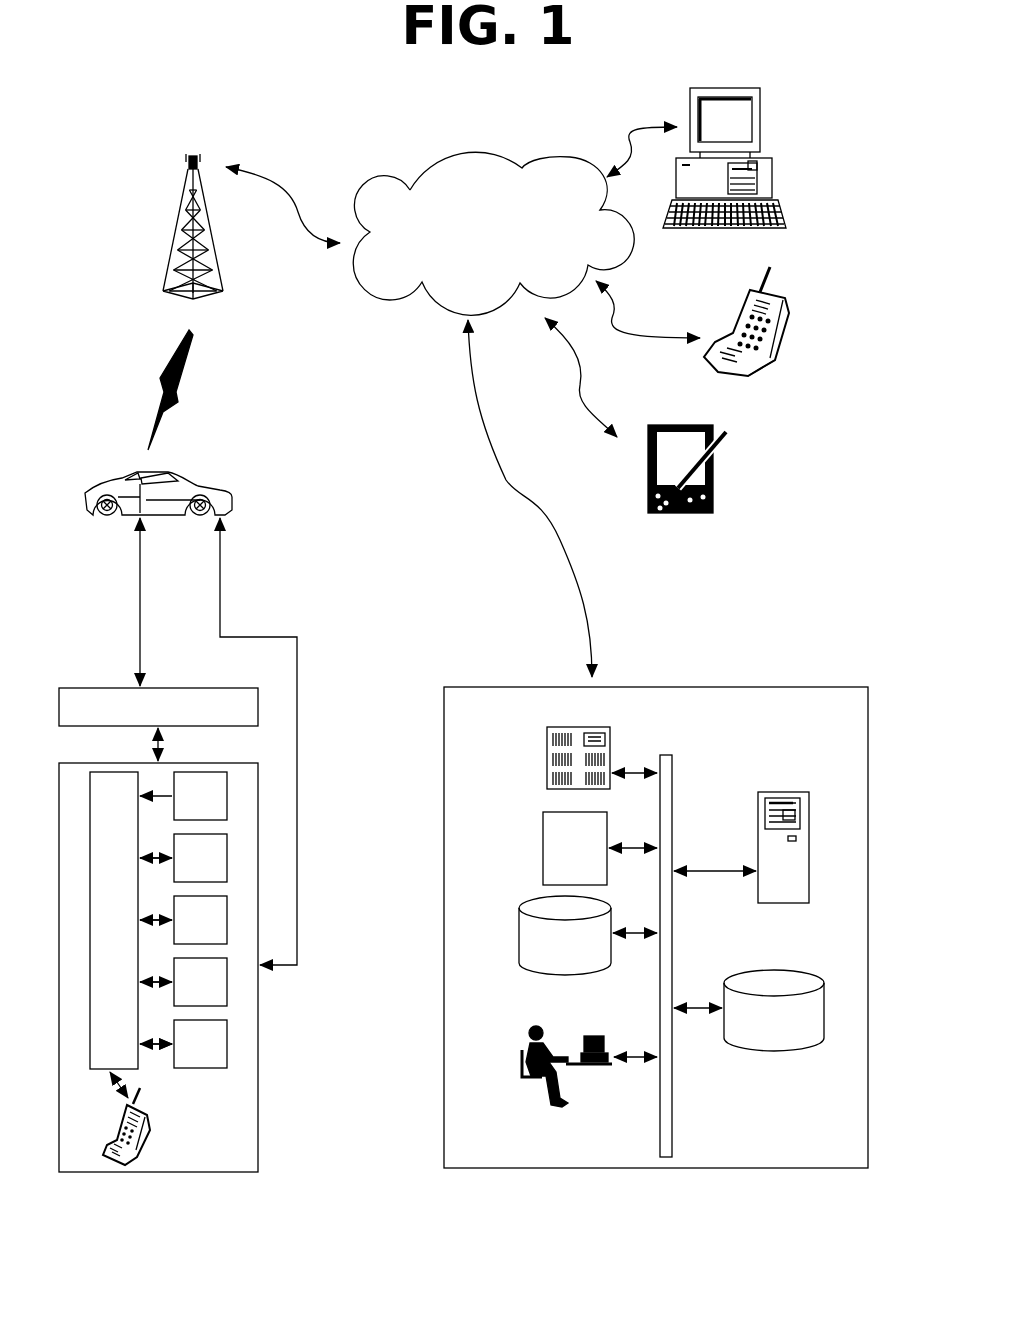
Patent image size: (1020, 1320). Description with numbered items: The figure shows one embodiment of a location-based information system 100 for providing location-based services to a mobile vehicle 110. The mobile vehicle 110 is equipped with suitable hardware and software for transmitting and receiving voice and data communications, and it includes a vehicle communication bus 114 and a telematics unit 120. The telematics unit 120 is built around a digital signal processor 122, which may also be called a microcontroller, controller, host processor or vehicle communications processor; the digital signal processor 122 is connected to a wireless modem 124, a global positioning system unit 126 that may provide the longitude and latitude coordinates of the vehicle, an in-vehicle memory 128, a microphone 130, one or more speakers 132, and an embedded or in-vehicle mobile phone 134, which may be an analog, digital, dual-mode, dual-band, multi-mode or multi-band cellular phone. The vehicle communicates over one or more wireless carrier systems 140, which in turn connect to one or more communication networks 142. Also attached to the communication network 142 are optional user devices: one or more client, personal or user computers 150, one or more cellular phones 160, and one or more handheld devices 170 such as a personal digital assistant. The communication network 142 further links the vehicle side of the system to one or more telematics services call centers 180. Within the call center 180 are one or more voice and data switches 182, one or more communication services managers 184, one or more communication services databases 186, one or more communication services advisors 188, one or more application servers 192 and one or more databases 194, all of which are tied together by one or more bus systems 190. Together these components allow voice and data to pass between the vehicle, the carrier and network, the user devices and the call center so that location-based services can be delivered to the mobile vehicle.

The location-based information system 100 is at (93, 122).
The mobile vehicle 110 is at (118, 478).
The vehicle communication bus 114 is at (158, 707).
The telematics unit 120 is at (158, 1019).
The digital signal processor 122 is at (114, 920).
The wireless modem 124 is at (200, 796).
The global positioning system unit 126 is at (200, 858).
The in-vehicle memory 128 is at (200, 920).
The microphone 130 is at (200, 982).
The speaker 132 is at (200, 1044).
The embedded or in-vehicle mobile phone 134 is at (150, 1120).
The wireless carrier system 140 is at (213, 268).
The communication network 142 is at (493, 233).
The user computer 150 is at (765, 158).
The cellular phone 160 is at (790, 318).
The handheld device 170 is at (712, 455).
The telematics services call center 180 is at (786, 675).
The voice and data switch 182 is at (590, 727).
The communication services manager 184 is at (575, 848).
The communication services database 186 is at (565, 935).
The communication services advisor 188 is at (557, 1045).
The bus system 190 is at (659, 1108).
The application server 192 is at (783, 847).
The database 194 is at (774, 1010).